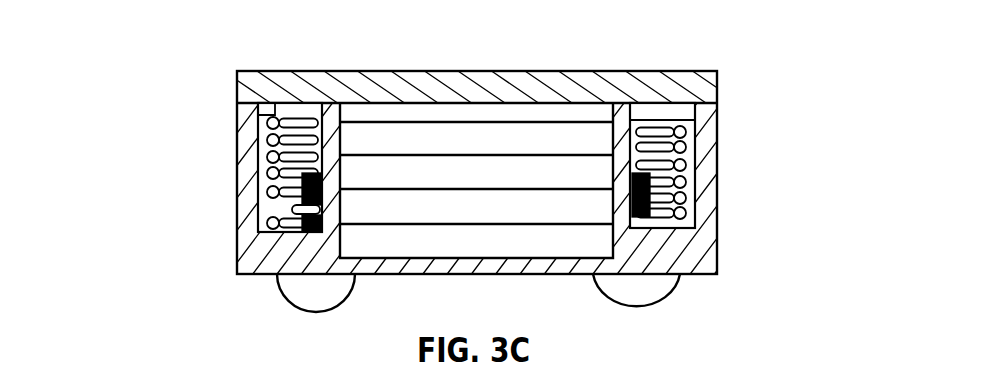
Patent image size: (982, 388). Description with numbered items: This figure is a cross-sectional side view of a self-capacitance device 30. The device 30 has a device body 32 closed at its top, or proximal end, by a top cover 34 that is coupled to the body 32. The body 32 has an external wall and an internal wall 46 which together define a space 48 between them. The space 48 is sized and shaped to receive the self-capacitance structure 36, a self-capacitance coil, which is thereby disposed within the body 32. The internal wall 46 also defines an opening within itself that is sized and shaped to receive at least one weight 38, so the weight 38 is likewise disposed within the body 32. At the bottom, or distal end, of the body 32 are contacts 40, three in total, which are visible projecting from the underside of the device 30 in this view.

The self-capacitance device 30 is at (75, 67).
The device body 32 is at (702, 192).
The top cover 34 is at (325, 83).
The self-capacitance structure 36 is at (680, 148).
The weight 38 is at (558, 138).
The contacts 40 is at (318, 288).
The internal wall 46 is at (335, 137).
The space 48 is at (685, 220).